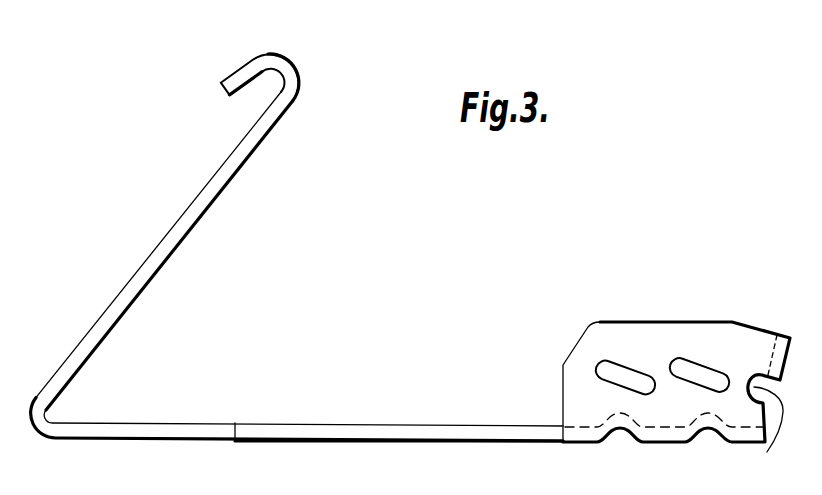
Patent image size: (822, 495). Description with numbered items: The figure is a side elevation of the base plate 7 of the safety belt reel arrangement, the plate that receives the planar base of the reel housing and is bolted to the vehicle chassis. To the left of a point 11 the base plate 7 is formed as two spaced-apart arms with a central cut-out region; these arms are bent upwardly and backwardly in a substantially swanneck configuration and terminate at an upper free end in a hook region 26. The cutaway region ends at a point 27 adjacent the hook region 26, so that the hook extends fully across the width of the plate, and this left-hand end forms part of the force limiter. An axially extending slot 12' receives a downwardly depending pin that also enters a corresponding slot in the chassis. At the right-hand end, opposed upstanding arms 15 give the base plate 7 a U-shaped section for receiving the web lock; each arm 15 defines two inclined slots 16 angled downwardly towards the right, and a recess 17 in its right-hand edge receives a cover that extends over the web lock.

The base plate 7 is at (193, 449).
The point 11 is at (238, 430).
The axially extending slot 12' is at (399, 408).
The upstanding arm 15 is at (702, 335).
The inclined slot 16 is at (623, 362).
The recess 17 is at (760, 436).
The hook region 26 is at (281, 50).
The point 27 is at (264, 121).